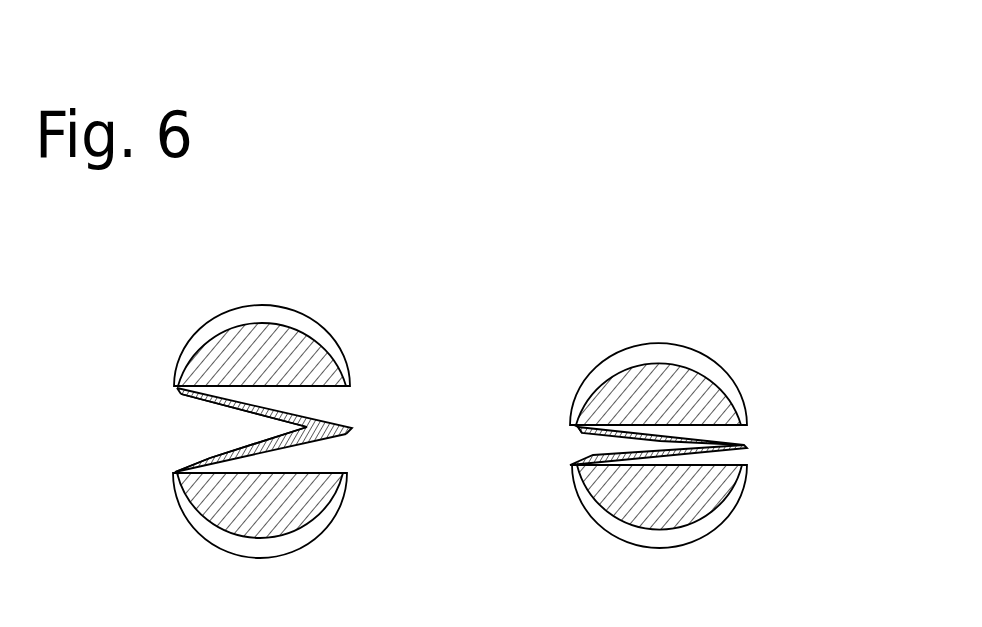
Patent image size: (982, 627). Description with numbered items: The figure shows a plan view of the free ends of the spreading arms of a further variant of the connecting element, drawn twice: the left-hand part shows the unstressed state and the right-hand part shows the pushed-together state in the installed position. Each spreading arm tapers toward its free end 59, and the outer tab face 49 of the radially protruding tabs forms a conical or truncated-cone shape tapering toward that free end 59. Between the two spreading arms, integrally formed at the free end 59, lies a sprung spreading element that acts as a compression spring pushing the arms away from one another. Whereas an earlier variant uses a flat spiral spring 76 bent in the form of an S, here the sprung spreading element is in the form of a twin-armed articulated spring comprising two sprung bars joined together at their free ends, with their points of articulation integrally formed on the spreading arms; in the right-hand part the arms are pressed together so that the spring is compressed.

The outer tab face 49 is at (290, 310).
The free end 59 is at (315, 338).
The flat spiral spring 76 is at (299, 460).